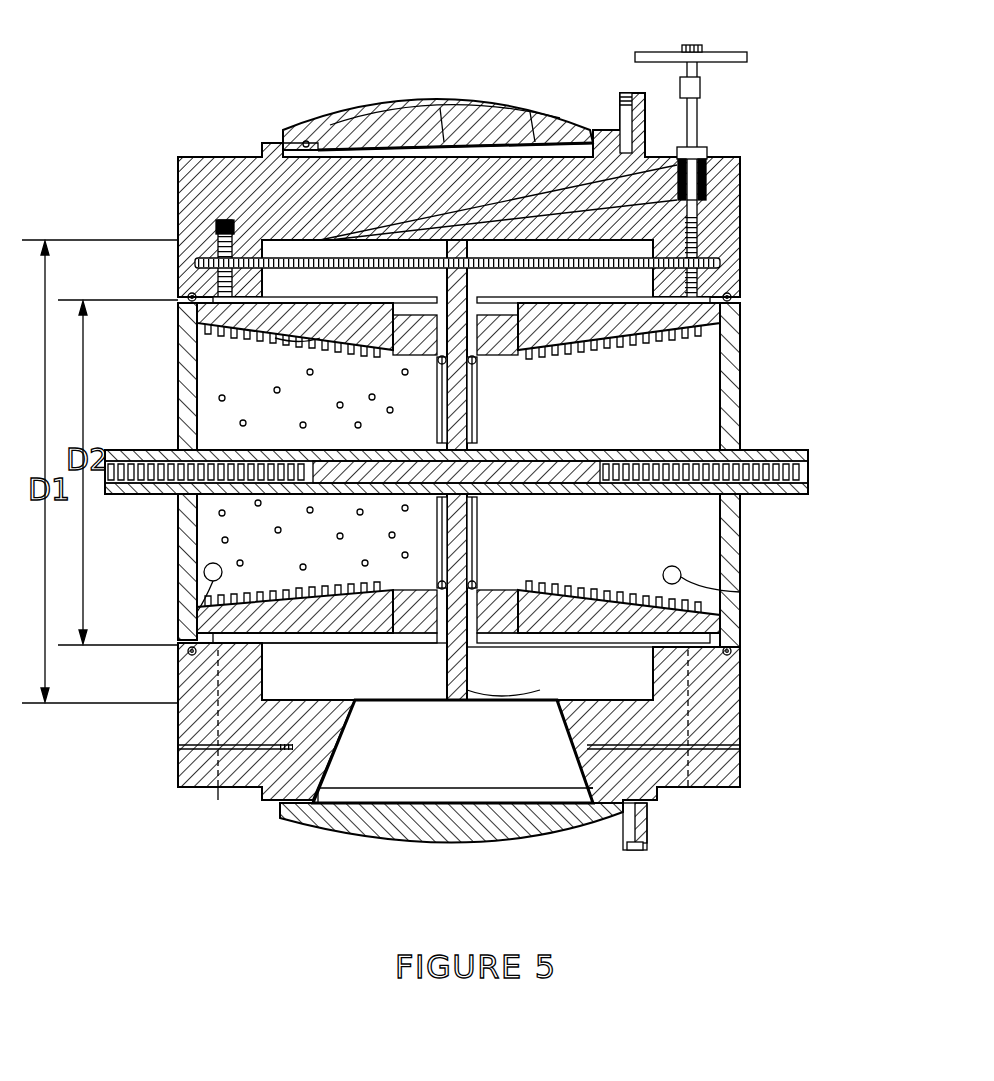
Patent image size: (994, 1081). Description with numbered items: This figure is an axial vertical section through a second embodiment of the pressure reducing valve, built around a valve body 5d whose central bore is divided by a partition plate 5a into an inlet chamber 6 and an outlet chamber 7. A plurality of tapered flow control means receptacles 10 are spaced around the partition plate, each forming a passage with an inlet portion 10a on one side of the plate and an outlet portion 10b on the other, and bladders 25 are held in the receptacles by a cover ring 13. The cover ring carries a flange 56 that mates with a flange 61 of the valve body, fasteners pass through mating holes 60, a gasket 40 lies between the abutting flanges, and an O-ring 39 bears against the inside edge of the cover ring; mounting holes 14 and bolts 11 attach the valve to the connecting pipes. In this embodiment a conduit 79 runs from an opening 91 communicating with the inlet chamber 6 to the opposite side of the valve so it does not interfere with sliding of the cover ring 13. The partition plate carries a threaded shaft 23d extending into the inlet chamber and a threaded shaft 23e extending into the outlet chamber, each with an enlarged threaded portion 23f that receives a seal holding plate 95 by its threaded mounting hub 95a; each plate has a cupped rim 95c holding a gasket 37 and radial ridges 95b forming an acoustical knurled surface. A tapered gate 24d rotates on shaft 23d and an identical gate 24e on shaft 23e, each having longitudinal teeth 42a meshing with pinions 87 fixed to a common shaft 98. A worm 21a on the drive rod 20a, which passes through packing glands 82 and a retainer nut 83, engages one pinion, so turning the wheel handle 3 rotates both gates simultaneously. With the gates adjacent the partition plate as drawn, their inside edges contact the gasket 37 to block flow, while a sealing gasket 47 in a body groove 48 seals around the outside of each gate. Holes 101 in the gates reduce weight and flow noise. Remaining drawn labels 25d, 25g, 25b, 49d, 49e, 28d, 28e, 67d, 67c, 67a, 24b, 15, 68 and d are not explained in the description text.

The wheel handle 3 is at (708, 52).
The drive rod 20a is at (680, 88).
The retainer nut 83 is at (700, 150).
The conduit 79 is at (320, 239).
The packing glands 82 is at (706, 178).
The worm 21a is at (705, 200).
The pinions 87 is at (218, 228).
The sealing gasket 47 is at (734, 297).
The body groove 48 is at (188, 672).
The cover ring 13 is at (360, 122).
The O-ring 39 is at (298, 140).
The valve body 5d is at (180, 166).
The lens surface 25d is at (428, 110).
The lens 25g is at (466, 140).
The bladders 25 is at (550, 138).
The mating holes 60 is at (622, 120).
The opening 91 is at (405, 238).
The inlet chamber 6 is at (282, 288).
The longitudinal teeth 42a is at (318, 290).
The shaft 98 is at (438, 470).
The outlet chamber 7 is at (457, 280).
The holes 101 is at (275, 342).
The gate 24d is at (290, 374).
The left collar end 49d is at (150, 450).
The cupped rim 95c is at (437, 363).
The radial ridges 95b is at (432, 422).
The gate 24e is at (612, 340).
The seal holding plate 95 is at (476, 372).
The threaded mounting hub 95a is at (478, 422).
The right collar end 49e is at (757, 450).
The threaded shaft 23e is at (830, 470).
The threaded shaft 23d is at (180, 502).
The lower left tapered member 28d is at (200, 600).
The perforated plate 67d is at (200, 612).
The enlarged threaded portion 23f is at (482, 510).
The gasket 37 is at (478, 562).
The right wall lower 28e is at (740, 540).
The perforation 67c is at (740, 592).
The lower right tapered member 24b is at (720, 637).
The mounting holes 14 is at (180, 747).
The bolt 67a is at (222, 790).
The inlet portion 10a is at (354, 671).
The outlet portion 10b is at (560, 673).
The partition plate 5a is at (509, 676).
The recess 15 is at (580, 700).
The lower lens cell 25b is at (438, 701).
The flow control means receptacles 10 is at (377, 803).
The flange 56 is at (623, 830).
The gasket 40 is at (636, 850).
The flange 61 is at (660, 803).
The bottom block 68 is at (692, 790).
The bolts 11 is at (740, 747).
The label d is at (420, 652).